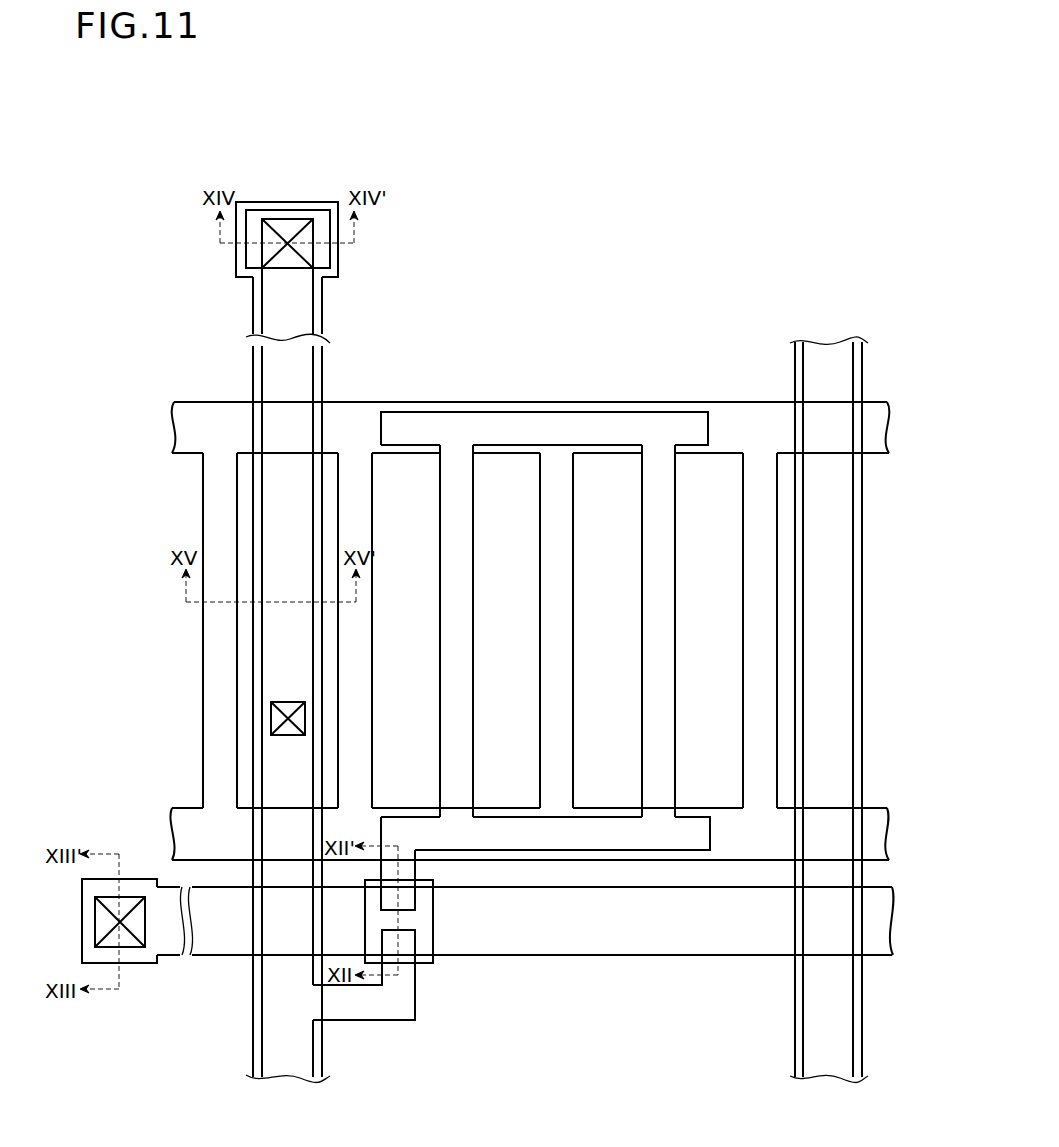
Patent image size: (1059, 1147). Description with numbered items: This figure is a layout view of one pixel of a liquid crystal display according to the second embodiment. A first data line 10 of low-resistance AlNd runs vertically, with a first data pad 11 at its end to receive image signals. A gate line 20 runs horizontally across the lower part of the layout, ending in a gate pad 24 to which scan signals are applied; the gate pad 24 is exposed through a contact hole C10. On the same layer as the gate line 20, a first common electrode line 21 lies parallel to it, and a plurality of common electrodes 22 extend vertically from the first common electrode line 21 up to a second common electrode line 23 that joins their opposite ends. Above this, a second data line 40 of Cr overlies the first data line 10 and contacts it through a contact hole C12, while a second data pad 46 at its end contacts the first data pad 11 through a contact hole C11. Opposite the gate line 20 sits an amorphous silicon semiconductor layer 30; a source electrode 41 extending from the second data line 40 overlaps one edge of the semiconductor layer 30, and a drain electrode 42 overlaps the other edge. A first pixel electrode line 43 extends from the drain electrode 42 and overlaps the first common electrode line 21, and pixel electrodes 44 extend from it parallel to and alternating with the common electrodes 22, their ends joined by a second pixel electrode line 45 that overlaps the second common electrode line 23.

The first data line 10 is at (253, 1015).
The first data pad 11 is at (332, 272).
The gate line 20 is at (700, 956).
The first common electrode line 21 is at (767, 861).
The common electrodes 22 is at (575, 635).
The second common electrode line 23 is at (683, 402).
The gate pad 24 is at (143, 964).
The semiconductor layer 30 is at (433, 963).
The second data line 40 is at (313, 478).
The source electrode 41 is at (416, 931).
The drain electrode 42 is at (416, 910).
The first pixel electrode line 43 is at (712, 832).
The pixel electrodes 44 is at (680, 712).
The second pixel electrode line 45 is at (560, 412).
The second data pad 46 is at (339, 255).
The contact hole C10 is at (140, 896).
The contact hole C11 is at (313, 222).
The contact hole C12 is at (271, 702).